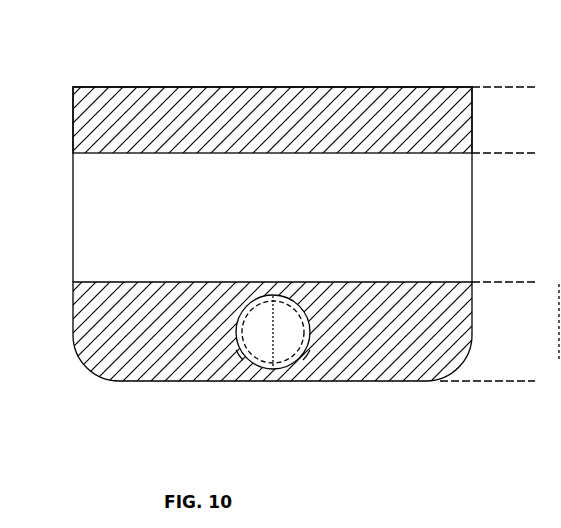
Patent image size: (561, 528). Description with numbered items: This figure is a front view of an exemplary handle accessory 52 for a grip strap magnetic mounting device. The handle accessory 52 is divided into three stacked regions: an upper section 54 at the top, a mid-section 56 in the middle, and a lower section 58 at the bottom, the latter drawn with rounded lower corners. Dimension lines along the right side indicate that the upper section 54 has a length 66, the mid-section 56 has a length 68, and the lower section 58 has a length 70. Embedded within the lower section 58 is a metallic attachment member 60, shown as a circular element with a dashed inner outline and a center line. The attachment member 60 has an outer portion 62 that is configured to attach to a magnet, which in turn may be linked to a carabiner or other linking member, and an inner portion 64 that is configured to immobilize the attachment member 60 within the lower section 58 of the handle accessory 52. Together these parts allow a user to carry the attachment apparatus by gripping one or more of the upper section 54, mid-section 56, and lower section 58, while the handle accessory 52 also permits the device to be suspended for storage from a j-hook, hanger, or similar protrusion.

The handle accessory 52 is at (122, 64).
The upper section 54 is at (384, 98).
The mid-section 56 is at (101, 250).
The lower section 58 is at (99, 353).
The metallic attachment member 60 is at (273, 392).
The outer portion 62 is at (232, 364).
The inner portion 64 is at (304, 364).
The length of upper section 66 is at (501, 97).
The length of mid-section 68 is at (501, 163).
The length of lower section 70 is at (501, 292).